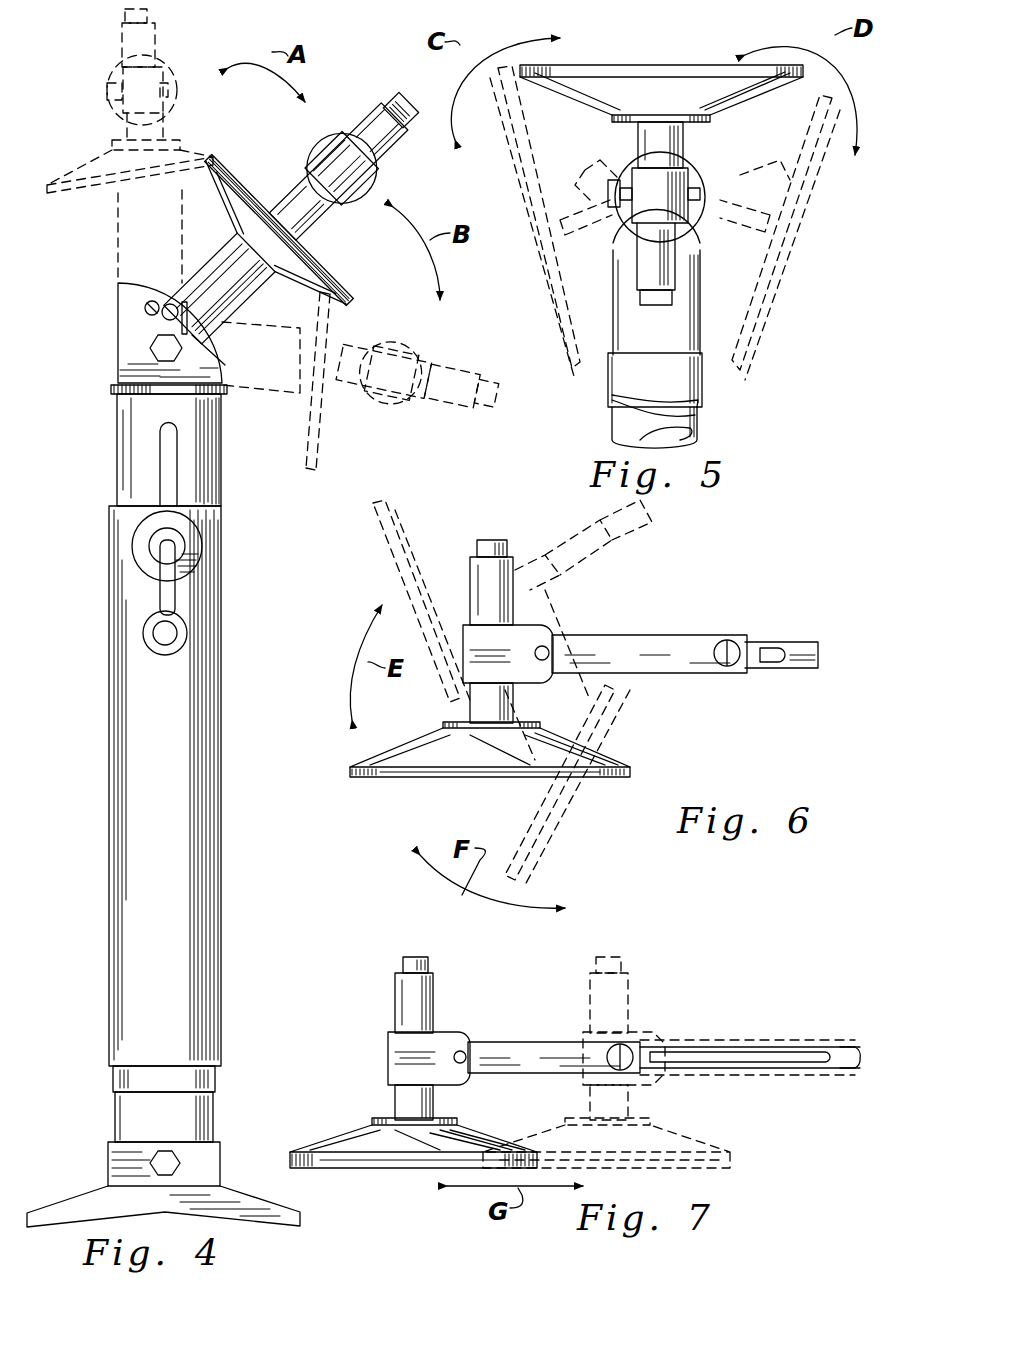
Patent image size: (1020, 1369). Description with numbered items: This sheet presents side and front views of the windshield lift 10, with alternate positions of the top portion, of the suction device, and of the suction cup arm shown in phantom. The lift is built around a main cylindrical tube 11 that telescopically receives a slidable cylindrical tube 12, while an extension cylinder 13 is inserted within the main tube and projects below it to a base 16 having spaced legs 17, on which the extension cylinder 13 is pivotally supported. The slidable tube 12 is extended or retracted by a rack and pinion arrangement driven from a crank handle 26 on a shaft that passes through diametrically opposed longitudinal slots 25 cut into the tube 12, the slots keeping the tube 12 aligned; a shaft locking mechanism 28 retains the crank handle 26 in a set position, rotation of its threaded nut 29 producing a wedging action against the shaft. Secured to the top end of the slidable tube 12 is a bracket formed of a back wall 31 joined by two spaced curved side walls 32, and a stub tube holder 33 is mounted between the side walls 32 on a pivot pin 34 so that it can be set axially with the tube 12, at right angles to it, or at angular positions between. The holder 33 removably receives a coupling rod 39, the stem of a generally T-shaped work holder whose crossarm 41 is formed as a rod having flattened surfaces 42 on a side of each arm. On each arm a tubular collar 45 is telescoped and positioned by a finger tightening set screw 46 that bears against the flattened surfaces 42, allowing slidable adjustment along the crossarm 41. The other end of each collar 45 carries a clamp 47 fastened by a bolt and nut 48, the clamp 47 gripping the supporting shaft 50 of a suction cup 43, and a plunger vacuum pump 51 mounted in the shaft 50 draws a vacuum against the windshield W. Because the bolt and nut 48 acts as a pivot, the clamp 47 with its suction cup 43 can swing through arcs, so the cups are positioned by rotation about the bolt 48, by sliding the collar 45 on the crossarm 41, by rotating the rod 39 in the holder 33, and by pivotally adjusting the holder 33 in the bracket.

In FIG. 4, the windshield lift 10 is at (92, 896).
In FIG. 4, the main cylindrical tube 11 is at (117, 455).
In FIG. 4, the slidable cylindrical tube 12 is at (108, 845).
In FIG. 4, the extension cylinder 13 is at (112, 1088).
In FIG. 4, the base 16 is at (110, 1164).
In FIG. 4, the legs 17 is at (270, 1195).
In FIG. 4, the longitudinal slots 25 is at (168, 450).
In FIG. 4, the crank handle 26 is at (190, 620).
In FIG. 4, the shaft locking mechanism 28 is at (140, 548).
In FIG. 4, the threaded nut 29 is at (195, 543).
In FIG. 4, the back wall 31 is at (112, 358).
In FIG. 4, the side walls 32 is at (126, 282).
In FIG. 4, the stub tube holder 33 is at (194, 284).
In FIG. 5, the stub tube holder 33 is at (607, 383).
In FIG. 4, the pivot pin 34 is at (148, 336).
In FIG. 4, the coupling rod 39 is at (248, 226).
In FIG. 5, the coupling rod 39 is at (608, 423).
In FIG. 7, the crossarm 41 is at (852, 1046).
In FIG. 6, the flattened surfaces 42 is at (770, 655).
In FIG. 7, the flattened surfaces 42 is at (688, 1055).
In FIG. 4, the suction cup 43 is at (340, 252).
In FIG. 5, the suction cup 43 is at (600, 95).
In FIG. 6, the suction cup 43 is at (415, 745).
In FIG. 7, the suction cup 43 is at (360, 1140).
In FIG. 6, the tubular collar 45 is at (630, 634).
In FIG. 7, the tubular collar 45 is at (495, 1042).
In FIG. 6, the finger tightening set screw 46 is at (727, 666).
In FIG. 7, the finger tightening set screw 46 is at (608, 1052).
In FIG. 4, the clamp 47 is at (308, 143).
In FIG. 4, the bolt and nut 48 is at (368, 195).
In FIG. 7, the bolt and nut 48 is at (460, 1063).
In FIG. 4, the supporting shaft 50 is at (392, 145).
In FIG. 5, the supporting shaft 50 is at (680, 136).
In FIG. 7, the supporting shaft 50 is at (395, 1003).
In FIG. 4, the plunger vacuum pump 51 is at (404, 104).
In FIG. 5, the plunger vacuum pump 51 is at (660, 305).
In FIG. 6, the plunger vacuum pump 51 is at (484, 540).
In FIG. 7, the plunger vacuum pump 51 is at (410, 957).